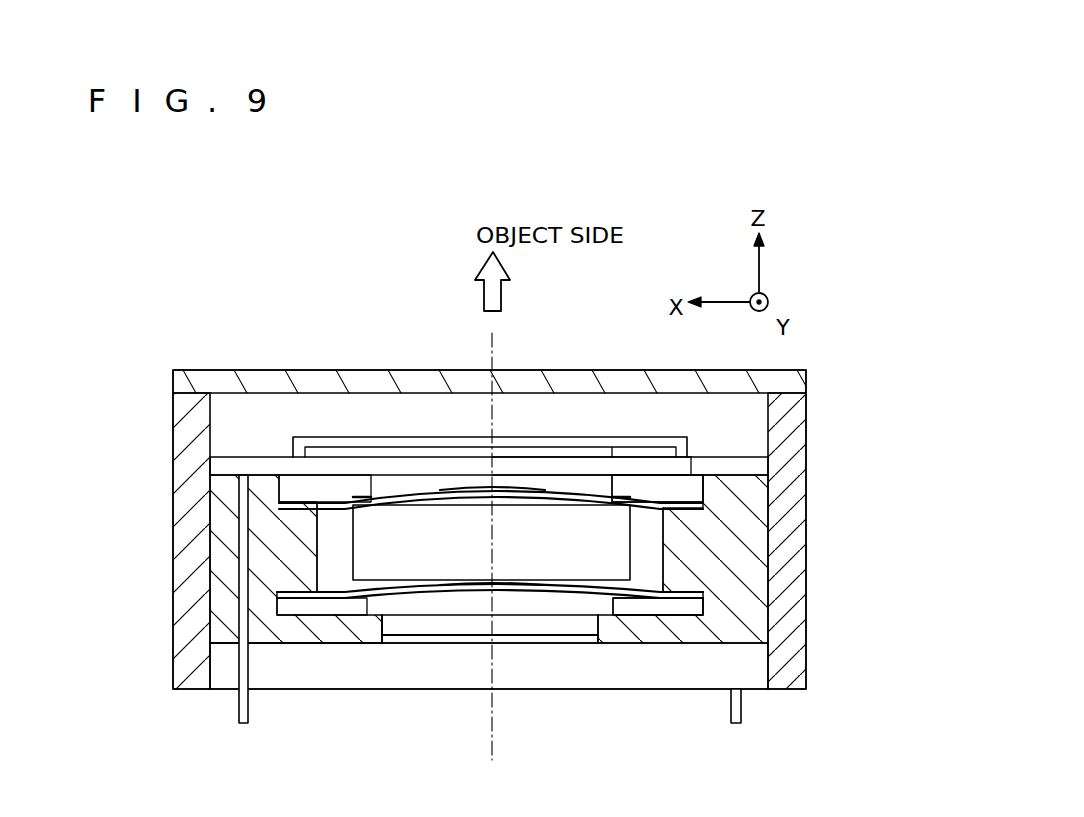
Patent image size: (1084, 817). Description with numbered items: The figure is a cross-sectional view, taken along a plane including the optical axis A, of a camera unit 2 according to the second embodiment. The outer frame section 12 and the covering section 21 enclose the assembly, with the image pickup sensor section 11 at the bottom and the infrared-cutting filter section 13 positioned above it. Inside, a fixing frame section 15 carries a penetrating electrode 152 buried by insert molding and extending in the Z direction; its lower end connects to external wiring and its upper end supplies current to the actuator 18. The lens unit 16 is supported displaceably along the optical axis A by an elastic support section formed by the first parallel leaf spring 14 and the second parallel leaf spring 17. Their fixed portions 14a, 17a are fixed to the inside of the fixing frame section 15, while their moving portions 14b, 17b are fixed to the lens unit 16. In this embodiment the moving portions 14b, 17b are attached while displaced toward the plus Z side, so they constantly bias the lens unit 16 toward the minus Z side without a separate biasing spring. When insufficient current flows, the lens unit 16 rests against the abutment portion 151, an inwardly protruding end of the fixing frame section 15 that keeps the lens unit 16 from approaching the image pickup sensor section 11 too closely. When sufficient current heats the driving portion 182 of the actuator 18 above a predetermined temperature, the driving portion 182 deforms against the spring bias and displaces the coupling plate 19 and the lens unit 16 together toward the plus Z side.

The camera unit 2 is at (248, 272).
The optical axis A is at (487, 355).
The covering section 21 is at (271, 383).
The outer frame section 12 is at (197, 607).
The image pickup sensor section 11 is at (635, 672).
The fixing frame section 15 is at (758, 558).
The abutment portion 151 is at (337, 630).
The penetrating electrode 152 is at (242, 498).
The actuator 18 is at (705, 451).
The driving portion 182 is at (568, 463).
The coupling plate 19 is at (350, 437).
The second parallel leaf spring 17 is at (417, 482).
The fixed portion 17a is at (688, 495).
The moving portion 17b is at (460, 492).
The lens unit 16 is at (388, 541).
The first parallel leaf spring 14 is at (422, 599).
The fixed portion 14a is at (688, 606).
The moving portion 14b is at (462, 591).
The infrared-cutting filter section 13 is at (540, 647).